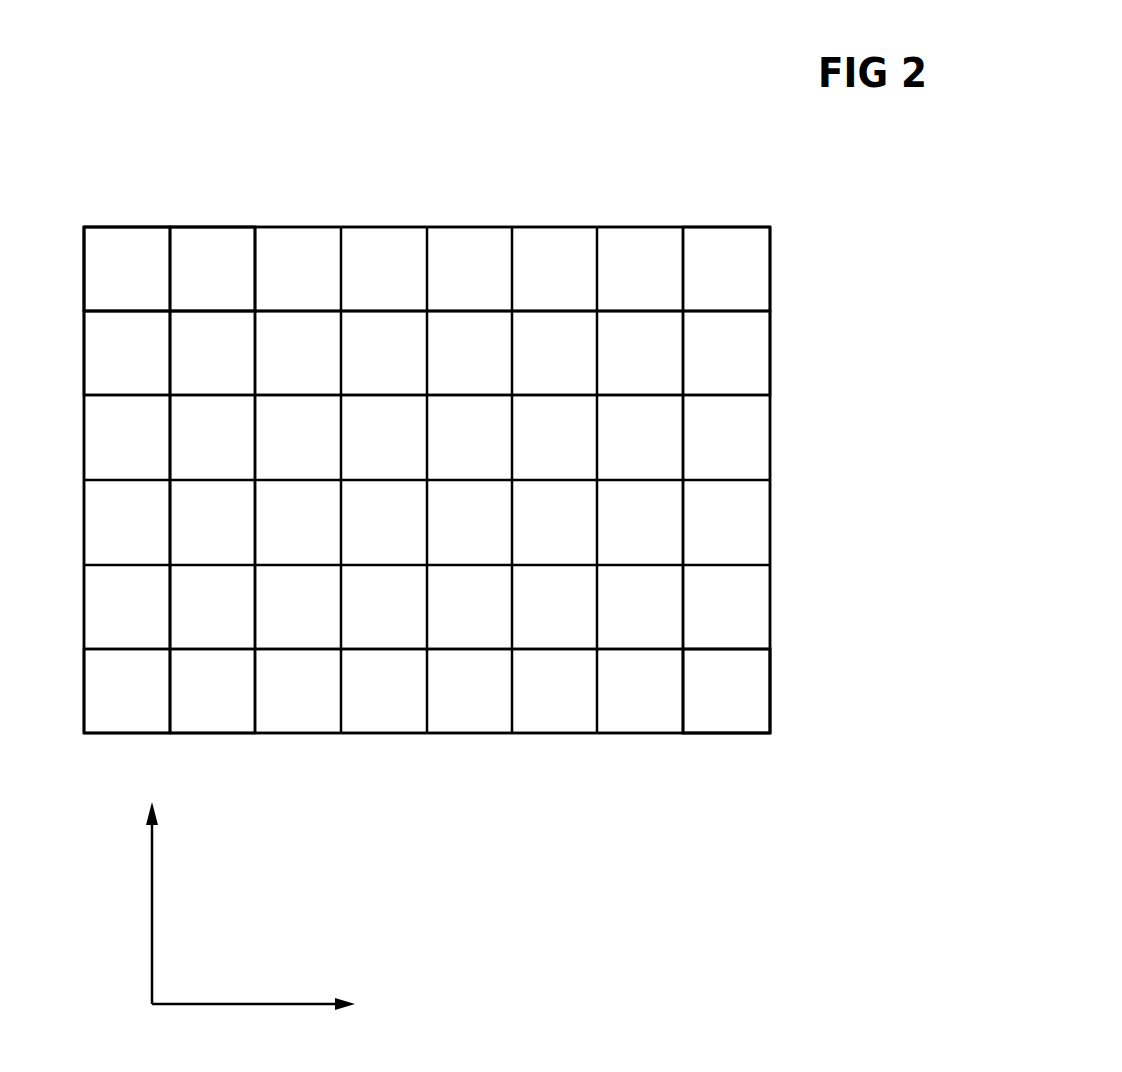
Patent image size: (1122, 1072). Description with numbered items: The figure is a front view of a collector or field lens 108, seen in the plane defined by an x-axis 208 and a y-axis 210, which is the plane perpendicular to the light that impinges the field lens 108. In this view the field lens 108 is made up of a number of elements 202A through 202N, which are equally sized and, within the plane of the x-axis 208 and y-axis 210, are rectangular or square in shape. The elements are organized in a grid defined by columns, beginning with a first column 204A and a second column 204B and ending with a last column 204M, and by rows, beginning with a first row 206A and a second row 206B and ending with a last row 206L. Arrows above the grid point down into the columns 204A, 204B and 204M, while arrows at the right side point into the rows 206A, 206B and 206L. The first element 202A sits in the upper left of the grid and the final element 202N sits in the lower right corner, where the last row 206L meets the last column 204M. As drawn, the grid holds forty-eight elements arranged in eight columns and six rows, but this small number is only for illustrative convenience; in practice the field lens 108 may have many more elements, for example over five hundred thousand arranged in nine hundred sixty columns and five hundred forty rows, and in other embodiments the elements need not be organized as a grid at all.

The field lens 108 is at (616, 830).
The element 202A is at (152, 280).
The element 202N is at (755, 703).
The column 204A is at (127, 205).
The column 204B is at (213, 205).
The column 204M is at (727, 205).
The row 206A is at (800, 269).
The row 206B is at (800, 355).
The row 206L is at (800, 692).
The x-axis 208 is at (314, 960).
The y-axis 210 is at (153, 834).